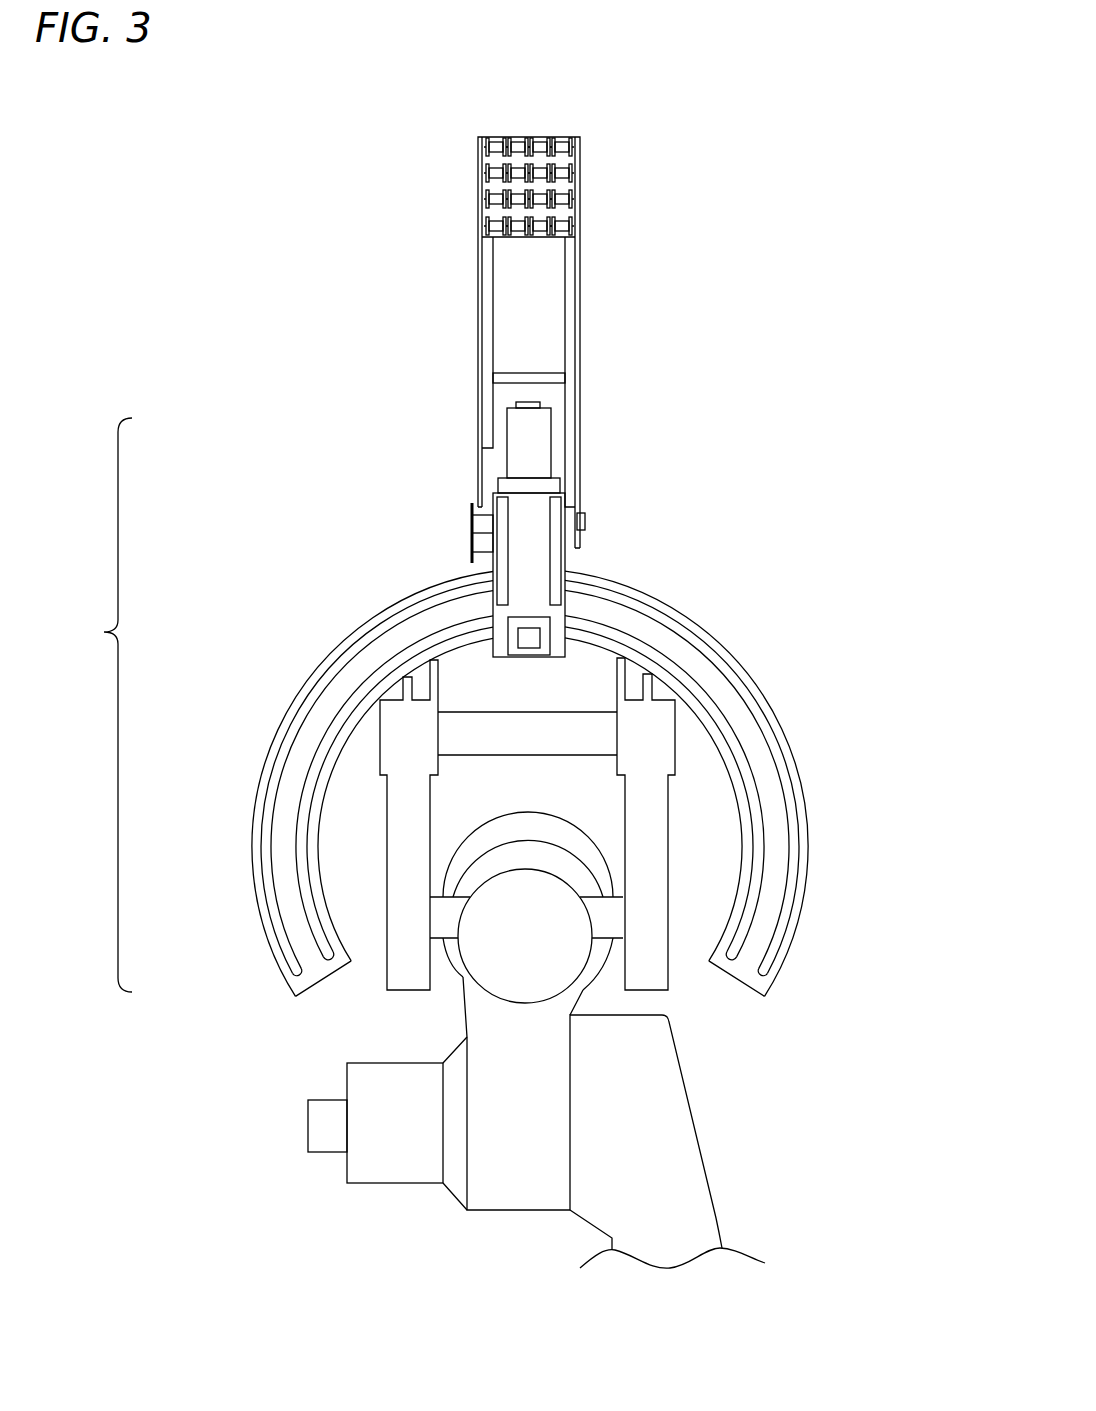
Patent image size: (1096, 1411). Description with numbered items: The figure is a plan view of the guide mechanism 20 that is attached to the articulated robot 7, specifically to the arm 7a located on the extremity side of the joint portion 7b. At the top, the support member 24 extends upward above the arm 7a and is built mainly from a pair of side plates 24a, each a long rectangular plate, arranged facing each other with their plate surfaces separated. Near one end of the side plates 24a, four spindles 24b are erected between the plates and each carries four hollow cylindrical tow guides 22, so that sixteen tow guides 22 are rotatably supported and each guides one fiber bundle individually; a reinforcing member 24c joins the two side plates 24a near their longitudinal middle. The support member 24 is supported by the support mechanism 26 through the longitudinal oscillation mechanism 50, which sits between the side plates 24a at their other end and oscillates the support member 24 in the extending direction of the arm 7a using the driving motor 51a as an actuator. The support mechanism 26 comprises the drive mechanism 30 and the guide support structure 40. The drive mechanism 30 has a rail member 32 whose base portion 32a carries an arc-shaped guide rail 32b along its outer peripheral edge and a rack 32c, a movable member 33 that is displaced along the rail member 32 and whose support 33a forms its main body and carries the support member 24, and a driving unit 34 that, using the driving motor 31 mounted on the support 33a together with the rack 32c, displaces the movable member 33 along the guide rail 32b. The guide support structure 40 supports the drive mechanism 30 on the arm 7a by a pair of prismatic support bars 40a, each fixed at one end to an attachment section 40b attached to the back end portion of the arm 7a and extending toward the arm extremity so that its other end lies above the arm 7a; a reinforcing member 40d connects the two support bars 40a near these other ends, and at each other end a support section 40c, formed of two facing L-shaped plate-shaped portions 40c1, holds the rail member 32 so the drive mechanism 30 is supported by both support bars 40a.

The guide mechanism 20 is at (225, 220).
The tow guide 22 is at (565, 140).
The support member 24 is at (452, 190).
The side plate 24a is at (480, 238).
The spindle 24b is at (545, 138).
The reinforcing member 24c is at (530, 378).
The support mechanism 26 is at (102, 705).
The drive mechanism 30 is at (330, 477).
The driving motor 31 is at (492, 600).
The rail member 32 is at (668, 598).
The base portion 32a is at (723, 642).
The guide rail 32b is at (740, 657).
The rack 32c is at (770, 703).
The movable member 33 is at (583, 556).
The support 33a is at (557, 625).
The driving unit 34 is at (458, 558).
The guide support structure 40 is at (693, 1003).
The support bar 40a is at (403, 822).
The attachment section 40b is at (448, 917).
The support section 40c is at (443, 768).
The plate-shaped portion 40c1 is at (658, 683).
The reinforcing member 40d is at (475, 740).
The longitudinal oscillation mechanism 50 is at (468, 490).
The driving motor 51a is at (530, 452).
The articulated robot 7 is at (278, 1195).
The arm 7a is at (517, 907).
The joint portion 7b is at (447, 1207).